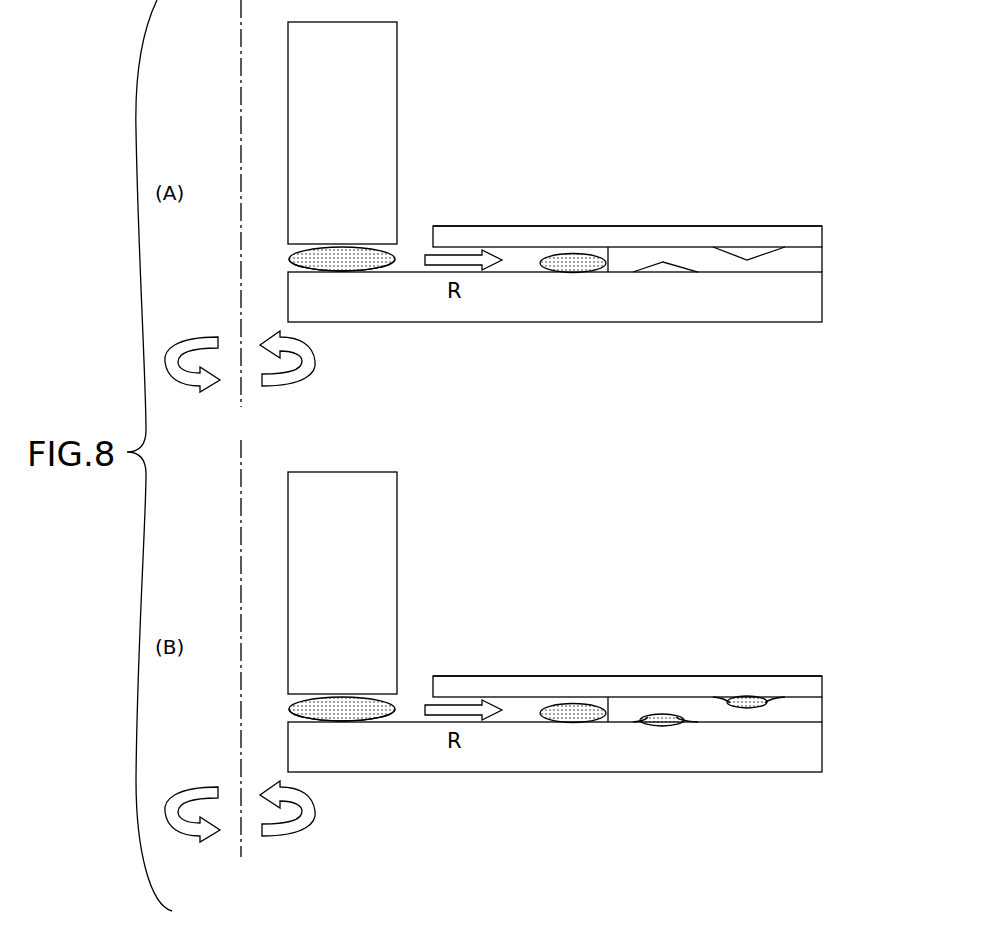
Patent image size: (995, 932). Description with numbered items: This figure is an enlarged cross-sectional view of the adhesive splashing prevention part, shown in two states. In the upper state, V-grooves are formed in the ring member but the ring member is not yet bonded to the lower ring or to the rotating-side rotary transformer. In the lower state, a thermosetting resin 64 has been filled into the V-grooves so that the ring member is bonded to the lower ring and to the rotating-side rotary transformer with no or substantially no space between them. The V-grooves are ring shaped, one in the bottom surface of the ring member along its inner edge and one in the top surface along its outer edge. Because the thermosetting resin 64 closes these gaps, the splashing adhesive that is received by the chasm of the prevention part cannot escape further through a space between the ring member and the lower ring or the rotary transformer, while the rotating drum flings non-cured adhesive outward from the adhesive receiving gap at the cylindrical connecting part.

The thermosetting resin 64 is at (755, 700).